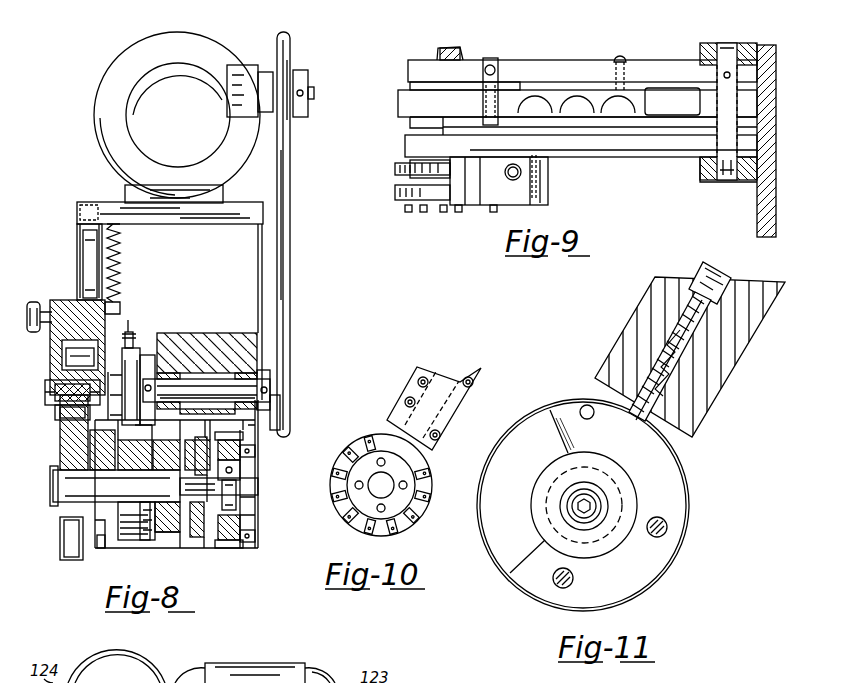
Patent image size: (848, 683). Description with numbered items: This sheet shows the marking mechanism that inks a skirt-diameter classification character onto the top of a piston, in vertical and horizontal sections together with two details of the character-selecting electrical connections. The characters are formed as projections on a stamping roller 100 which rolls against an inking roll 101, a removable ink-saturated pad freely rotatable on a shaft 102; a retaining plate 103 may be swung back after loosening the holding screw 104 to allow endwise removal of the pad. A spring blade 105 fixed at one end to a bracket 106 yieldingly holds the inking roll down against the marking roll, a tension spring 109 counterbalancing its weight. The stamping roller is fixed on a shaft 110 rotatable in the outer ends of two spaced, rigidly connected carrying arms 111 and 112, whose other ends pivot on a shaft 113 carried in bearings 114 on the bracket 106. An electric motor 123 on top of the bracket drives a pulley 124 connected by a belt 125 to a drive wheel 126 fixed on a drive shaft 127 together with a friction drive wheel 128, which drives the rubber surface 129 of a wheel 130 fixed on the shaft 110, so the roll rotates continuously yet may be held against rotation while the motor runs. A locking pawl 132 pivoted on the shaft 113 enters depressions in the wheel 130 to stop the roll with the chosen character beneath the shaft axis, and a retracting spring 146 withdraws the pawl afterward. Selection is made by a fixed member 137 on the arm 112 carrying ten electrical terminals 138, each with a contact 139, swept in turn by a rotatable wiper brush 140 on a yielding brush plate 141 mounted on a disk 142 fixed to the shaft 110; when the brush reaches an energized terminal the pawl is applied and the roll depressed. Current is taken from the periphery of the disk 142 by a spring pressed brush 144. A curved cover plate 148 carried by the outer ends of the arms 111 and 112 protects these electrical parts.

In FIG. 8, the stamping roller 100 is at (60, 535).
In FIG. 8, the inking roll 101 is at (60, 410).
In FIG. 8, the shaft 102 is at (50, 400).
In FIG. 8, the retaining plate 103 is at (50, 352).
In FIG. 8, the holding screw 104 is at (30, 310).
In FIG. 8, the spring blade 105 is at (90, 258).
In FIG. 8, the bracket 106 is at (80, 233).
In FIG. 9, the bracket 106 is at (757, 220).
In FIG. 8, the tension spring 109 is at (122, 250).
In FIG. 8, the shaft 110 is at (85, 485).
In FIG. 9, the shaft 110 is at (447, 52).
In FIG. 8, the carrying arm 111 is at (101, 549).
In FIG. 9, the carrying arm 111 is at (554, 70).
In FIG. 8, the carrying arm 112 is at (167, 540).
In FIG. 9, the carrying arm 112 is at (672, 150).
In FIG. 9, the shaft 113 is at (727, 180).
In FIG. 9, the bearings 114 is at (700, 165).
In FIG. 8, the electric motor 123 is at (128, 56).
In FIG. 8, the pulley 124 is at (292, 48).
In FIG. 8, the belt 125 is at (291, 213).
In FIG. 8, the drive wheel 126 is at (285, 432).
In FIG. 8, the drive shaft 127 is at (225, 393).
In FIG. 9, the drive shaft 127 is at (628, 54).
In FIG. 8, the friction drive wheel 128 is at (137, 345).
In FIG. 8, the rubber surface 129 is at (134, 542).
In FIG. 8, the wheel 130 is at (148, 542).
In FIG. 8, the locking pawl 132 is at (165, 397).
In FIG. 9, the locking pawl 132 is at (618, 122).
In FIG. 8, the fixed member 137 is at (245, 440).
In FIG. 10, the fixed member 137 is at (455, 407).
In FIG. 8, the electrical terminals 138 is at (243, 510).
In FIG. 9, the electrical terminals 138 is at (462, 213).
In FIG. 10, the electrical terminals 138 is at (428, 483).
In FIG. 8, the contact 139 is at (228, 545).
In FIG. 8, the wiper contact or brush 140 is at (245, 462).
In FIG. 11, the wiper contact or brush 140 is at (585, 404).
In FIG. 8, the yielding brush plate 141 is at (243, 478).
In FIG. 9, the yielding brush plate 141 is at (440, 165).
In FIG. 11, the yielding brush plate 141 is at (665, 510).
In FIG. 8, the disk 142 is at (200, 545).
In FIG. 9, the disk 142 is at (394, 170).
In FIG. 11, the disk 142 is at (683, 462).
In FIG. 11, the spring pressed brush 144 is at (670, 418).
In FIG. 8, the retracting spring 146 is at (130, 333).
In FIG. 8, the curved cover plate 148 is at (258, 533).